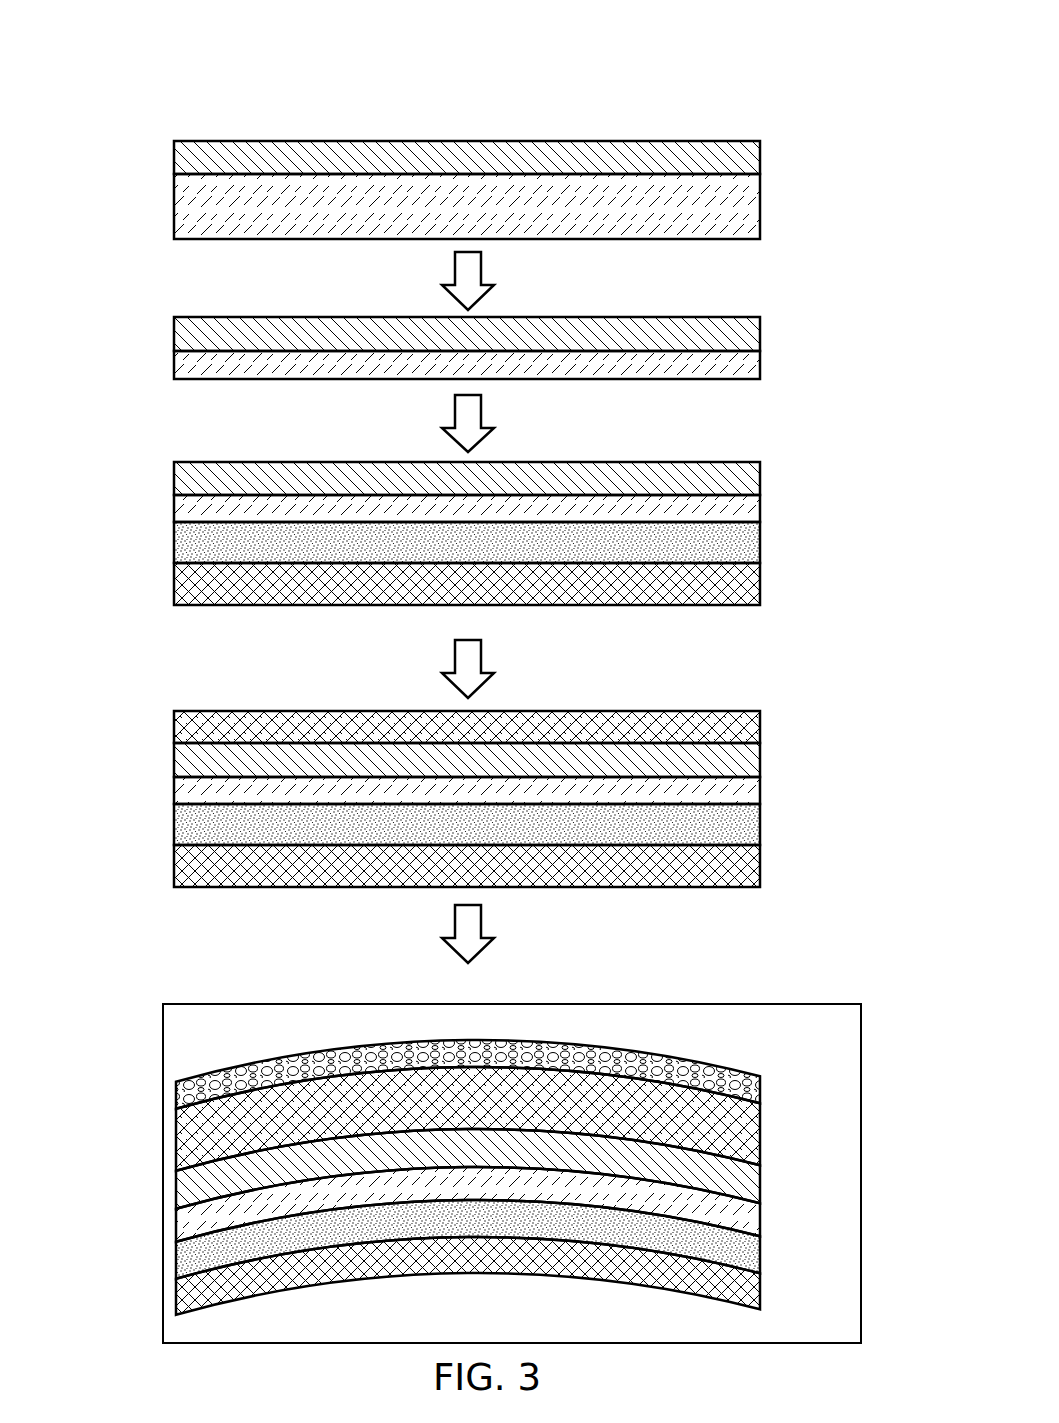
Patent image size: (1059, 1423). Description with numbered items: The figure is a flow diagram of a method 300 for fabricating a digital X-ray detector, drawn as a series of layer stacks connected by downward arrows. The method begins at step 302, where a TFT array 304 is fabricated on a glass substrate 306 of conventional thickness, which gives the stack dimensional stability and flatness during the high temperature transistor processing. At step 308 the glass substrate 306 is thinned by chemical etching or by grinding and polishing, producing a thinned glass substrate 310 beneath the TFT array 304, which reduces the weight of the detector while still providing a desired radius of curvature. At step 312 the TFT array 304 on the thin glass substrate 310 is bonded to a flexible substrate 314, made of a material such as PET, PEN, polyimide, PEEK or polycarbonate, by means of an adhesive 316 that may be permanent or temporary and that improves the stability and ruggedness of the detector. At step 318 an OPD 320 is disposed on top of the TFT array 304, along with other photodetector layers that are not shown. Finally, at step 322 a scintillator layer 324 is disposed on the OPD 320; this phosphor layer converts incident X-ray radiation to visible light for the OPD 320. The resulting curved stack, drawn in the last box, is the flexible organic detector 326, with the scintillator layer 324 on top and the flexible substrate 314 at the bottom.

The method for fabricating a digital X-ray detector 300 is at (773, 60).
The step of fabricating TFT array 302 is at (166, 125).
The TFT array 304 is at (762, 152).
The glass substrate 306 is at (762, 201).
The step of thinning glass substrate 308 is at (166, 304).
The thinned glass substrate 310 is at (762, 369).
The step of bonding to flexible substrate 312 is at (166, 446).
The flexible substrate 314 is at (762, 579).
The adhesive 316 is at (762, 539).
The step of disposing OPD 318 is at (166, 696).
The OPD 320 is at (762, 716).
The step of disposing scintillator layer 322 is at (120, 1005).
The scintillator layer 324 is at (762, 1087).
The flexible organic detector 326 is at (240, 1046).